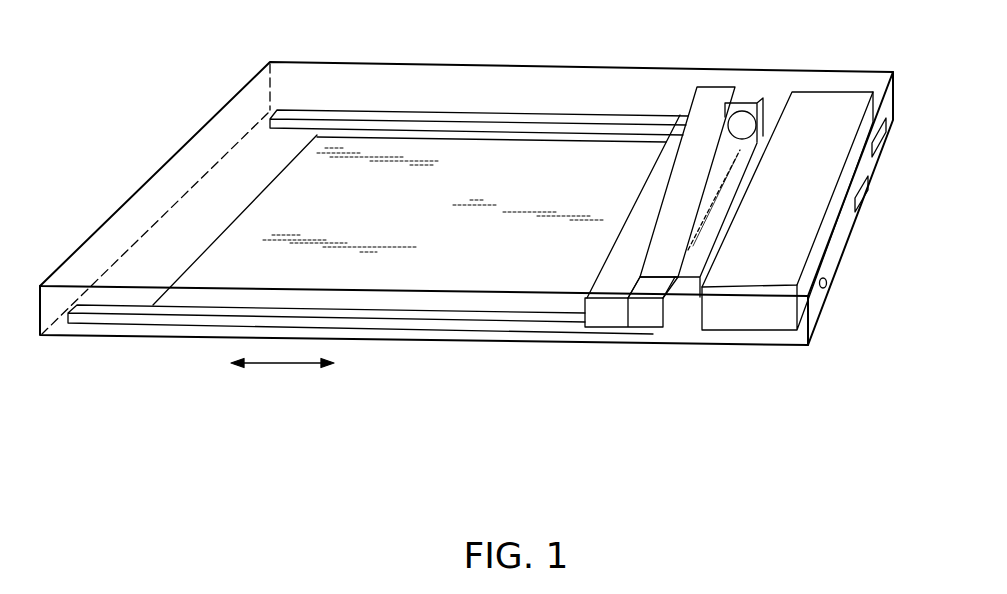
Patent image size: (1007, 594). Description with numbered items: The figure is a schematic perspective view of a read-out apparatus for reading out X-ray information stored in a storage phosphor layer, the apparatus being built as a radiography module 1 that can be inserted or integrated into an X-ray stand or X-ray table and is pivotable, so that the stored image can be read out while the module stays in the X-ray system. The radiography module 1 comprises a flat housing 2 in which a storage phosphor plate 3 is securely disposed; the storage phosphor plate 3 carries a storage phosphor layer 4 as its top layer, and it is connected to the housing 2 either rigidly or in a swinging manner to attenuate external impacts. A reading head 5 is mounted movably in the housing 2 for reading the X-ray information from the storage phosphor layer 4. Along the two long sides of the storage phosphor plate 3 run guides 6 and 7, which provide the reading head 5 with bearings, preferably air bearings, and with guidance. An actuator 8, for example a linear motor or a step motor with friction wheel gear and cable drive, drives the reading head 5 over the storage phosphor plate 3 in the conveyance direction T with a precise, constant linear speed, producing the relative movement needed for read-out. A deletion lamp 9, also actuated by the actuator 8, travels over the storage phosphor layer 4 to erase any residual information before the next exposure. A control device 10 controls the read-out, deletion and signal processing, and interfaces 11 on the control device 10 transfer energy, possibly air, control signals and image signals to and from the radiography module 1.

The radiography module 1 is at (172, 99).
The housing 2 is at (128, 197).
The storage phosphor plate 3 is at (226, 217).
The storage phosphor layer 4 is at (295, 163).
The reading head 5 is at (712, 90).
The guide 6 is at (328, 118).
The guide 7 is at (108, 309).
The actuator 8 is at (642, 320).
The deletion lamp 9 is at (749, 125).
The control device 10 is at (815, 104).
The interfaces 11 is at (866, 194).
The conveyance direction T is at (283, 365).